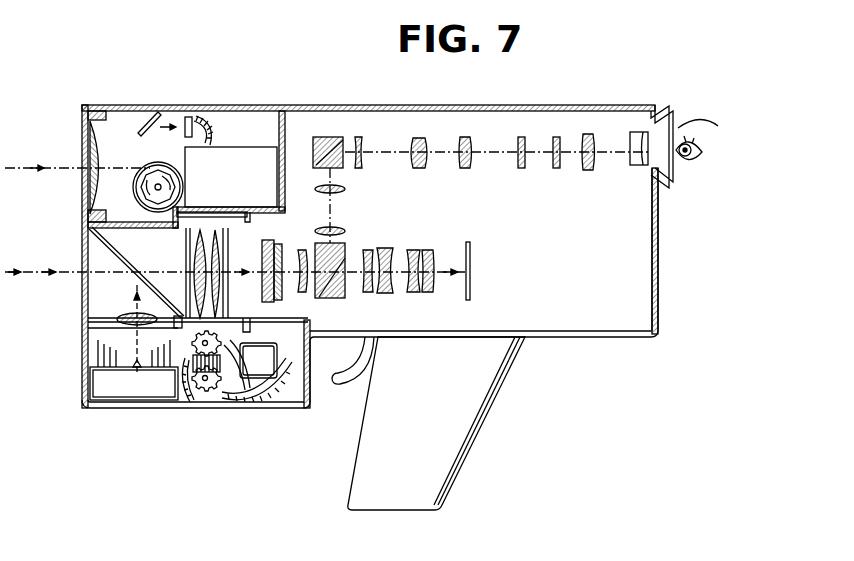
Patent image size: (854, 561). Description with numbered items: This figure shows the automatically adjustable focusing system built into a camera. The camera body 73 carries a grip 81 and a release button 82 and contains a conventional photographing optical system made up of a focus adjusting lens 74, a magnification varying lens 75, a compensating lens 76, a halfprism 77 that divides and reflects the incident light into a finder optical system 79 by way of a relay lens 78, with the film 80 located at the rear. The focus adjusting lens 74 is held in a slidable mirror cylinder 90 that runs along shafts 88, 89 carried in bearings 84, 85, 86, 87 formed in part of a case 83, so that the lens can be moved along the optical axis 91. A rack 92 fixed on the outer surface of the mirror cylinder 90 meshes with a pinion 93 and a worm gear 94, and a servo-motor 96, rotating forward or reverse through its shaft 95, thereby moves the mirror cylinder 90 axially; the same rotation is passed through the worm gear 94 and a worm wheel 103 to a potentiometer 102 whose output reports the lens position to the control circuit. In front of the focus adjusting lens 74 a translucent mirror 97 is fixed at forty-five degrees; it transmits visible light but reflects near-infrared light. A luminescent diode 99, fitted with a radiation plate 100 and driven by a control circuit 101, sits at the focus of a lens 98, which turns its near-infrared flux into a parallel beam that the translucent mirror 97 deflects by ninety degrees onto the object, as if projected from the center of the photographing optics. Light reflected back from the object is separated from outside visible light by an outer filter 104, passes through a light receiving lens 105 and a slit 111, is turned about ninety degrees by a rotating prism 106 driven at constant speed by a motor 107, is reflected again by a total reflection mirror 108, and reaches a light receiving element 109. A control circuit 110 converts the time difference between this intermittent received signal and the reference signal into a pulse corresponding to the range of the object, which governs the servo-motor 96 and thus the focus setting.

The camera body 73 is at (586, 322).
The focus adjusting lens 74 is at (198, 260).
The magnification varying lens 75 is at (280, 288).
The compensating lens 76 is at (299, 248).
The halfprism 77 is at (346, 300).
The relay lens 78 is at (417, 297).
The finder optical system 79 is at (403, 162).
The film 80 is at (472, 258).
The grip 81 is at (462, 432).
The release button 82 is at (342, 386).
The case 83 is at (238, 105).
The bearing 84 is at (250, 224).
The bearing 85 is at (226, 312).
The bearing 86 is at (173, 223).
The bearing 87 is at (172, 318).
The shaft 88 is at (246, 331).
The shaft 89 is at (264, 258).
The mirror cylinder 90 is at (265, 294).
The optical axis 91 is at (36, 270).
The rack 92 is at (178, 388).
The motor 93 is at (222, 363).
The worm gear 94 is at (228, 372).
The shaft of the servo-motor 95 is at (262, 400).
The servo-motor 96 is at (306, 353).
The translucent mirror 97 is at (98, 240).
The lens 98 is at (122, 316).
The luminescent diode 99 is at (134, 363).
The radiation plate 100 is at (108, 352).
The control circuit 101 is at (138, 368).
The potentiometer 102 is at (198, 396).
The worm wheel 103 is at (208, 398).
The outer filter 104 is at (82, 136).
The light receiving lens 105 is at (109, 121).
The rotating prism 106 is at (147, 185).
The motor 107 is at (144, 211).
The total reflection mirror 108 is at (152, 114).
The light receiving element 109 is at (203, 120).
The control circuit 110 is at (227, 182).
The slit 111 is at (186, 116).